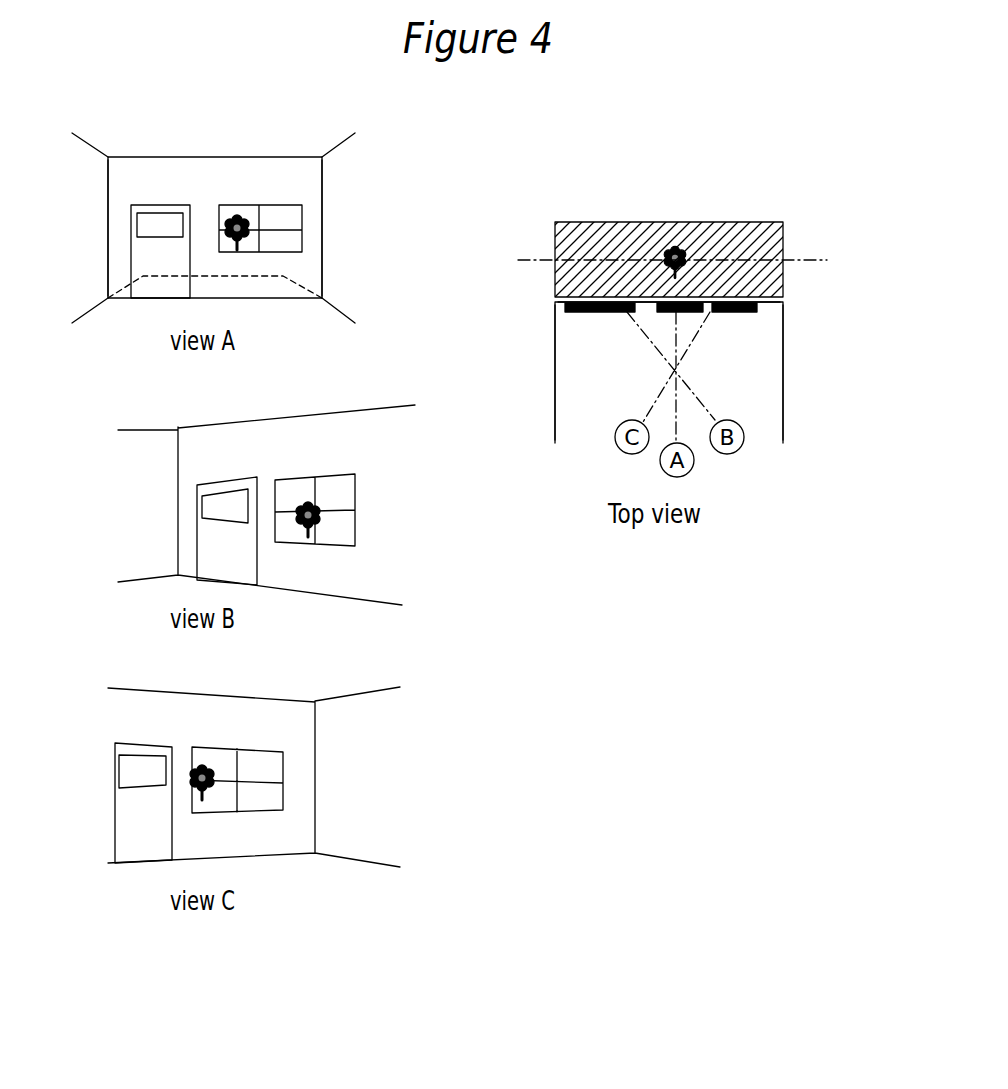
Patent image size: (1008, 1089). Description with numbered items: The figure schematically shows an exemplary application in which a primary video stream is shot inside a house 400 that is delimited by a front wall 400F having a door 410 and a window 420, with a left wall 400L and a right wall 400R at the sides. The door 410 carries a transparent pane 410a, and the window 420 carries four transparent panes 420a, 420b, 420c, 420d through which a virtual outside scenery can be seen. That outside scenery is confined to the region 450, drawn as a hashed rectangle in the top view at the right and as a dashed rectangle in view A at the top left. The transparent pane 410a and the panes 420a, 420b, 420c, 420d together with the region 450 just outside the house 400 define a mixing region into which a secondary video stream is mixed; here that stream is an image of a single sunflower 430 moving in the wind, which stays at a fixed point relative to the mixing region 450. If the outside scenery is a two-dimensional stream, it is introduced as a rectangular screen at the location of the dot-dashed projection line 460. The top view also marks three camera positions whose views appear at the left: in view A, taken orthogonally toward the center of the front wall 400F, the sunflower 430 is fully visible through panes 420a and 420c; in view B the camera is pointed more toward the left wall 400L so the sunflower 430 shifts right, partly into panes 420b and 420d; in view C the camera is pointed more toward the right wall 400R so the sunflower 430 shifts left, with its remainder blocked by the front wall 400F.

The house 400 is at (767, 405).
The left wall 400L is at (108, 245).
The right wall 400R is at (322, 245).
The front wall 400F is at (765, 316).
The door 410 is at (148, 203).
The transparent pane 410a is at (175, 230).
The window 420 is at (267, 201).
The transparent pane 420a is at (257, 217).
The transparent pane 420b is at (293, 213).
The transparent pane 420c is at (222, 247).
The transparent pane 420d is at (280, 242).
The sunflower 430 is at (247, 238).
The region 450 is at (313, 290).
The projection line 460 is at (830, 260).